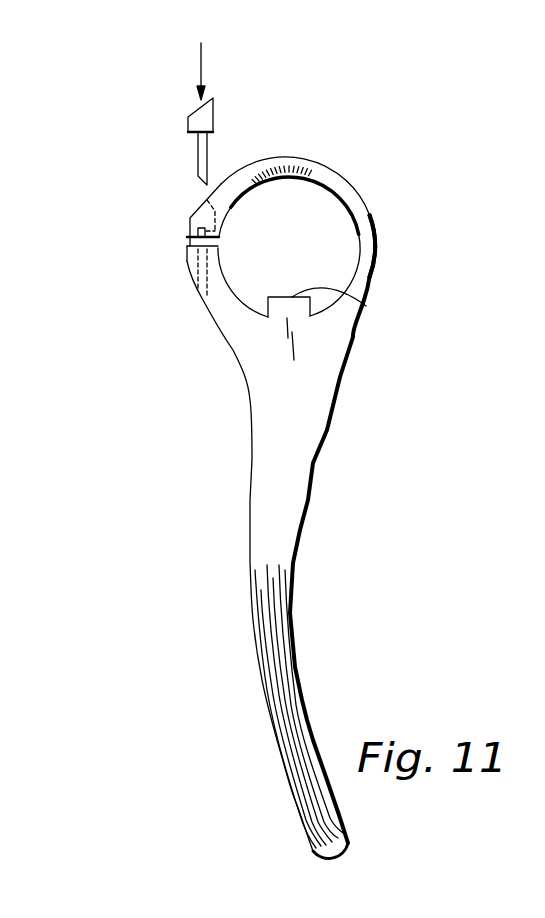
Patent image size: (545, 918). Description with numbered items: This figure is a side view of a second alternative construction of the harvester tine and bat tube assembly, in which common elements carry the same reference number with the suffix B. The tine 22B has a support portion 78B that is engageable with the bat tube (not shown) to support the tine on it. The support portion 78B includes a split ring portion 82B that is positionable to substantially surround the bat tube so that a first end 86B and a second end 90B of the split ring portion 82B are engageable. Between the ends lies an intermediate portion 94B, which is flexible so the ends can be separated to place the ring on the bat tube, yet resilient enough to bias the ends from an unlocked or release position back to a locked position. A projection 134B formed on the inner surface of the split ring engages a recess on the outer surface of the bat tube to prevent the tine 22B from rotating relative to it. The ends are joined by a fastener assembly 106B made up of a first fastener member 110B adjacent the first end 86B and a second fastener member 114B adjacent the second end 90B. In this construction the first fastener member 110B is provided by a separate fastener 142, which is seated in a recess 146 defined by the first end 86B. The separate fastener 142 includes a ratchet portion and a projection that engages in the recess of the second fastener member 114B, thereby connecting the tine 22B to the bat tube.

The separate fastener 142 is at (188, 119).
The second fastener member 114B is at (197, 168).
The first fastener member 110B is at (250, 95).
The split ring portion 82B is at (342, 177).
The intermediate portion 94B is at (375, 233).
The support portion 78B is at (391, 280).
The projection 134B is at (366, 306).
The tine 22B is at (313, 463).
The first end 86B is at (188, 220).
The fastener assembly 106B is at (170, 250).
The second end 90B is at (188, 258).
The recess 146 is at (228, 212).